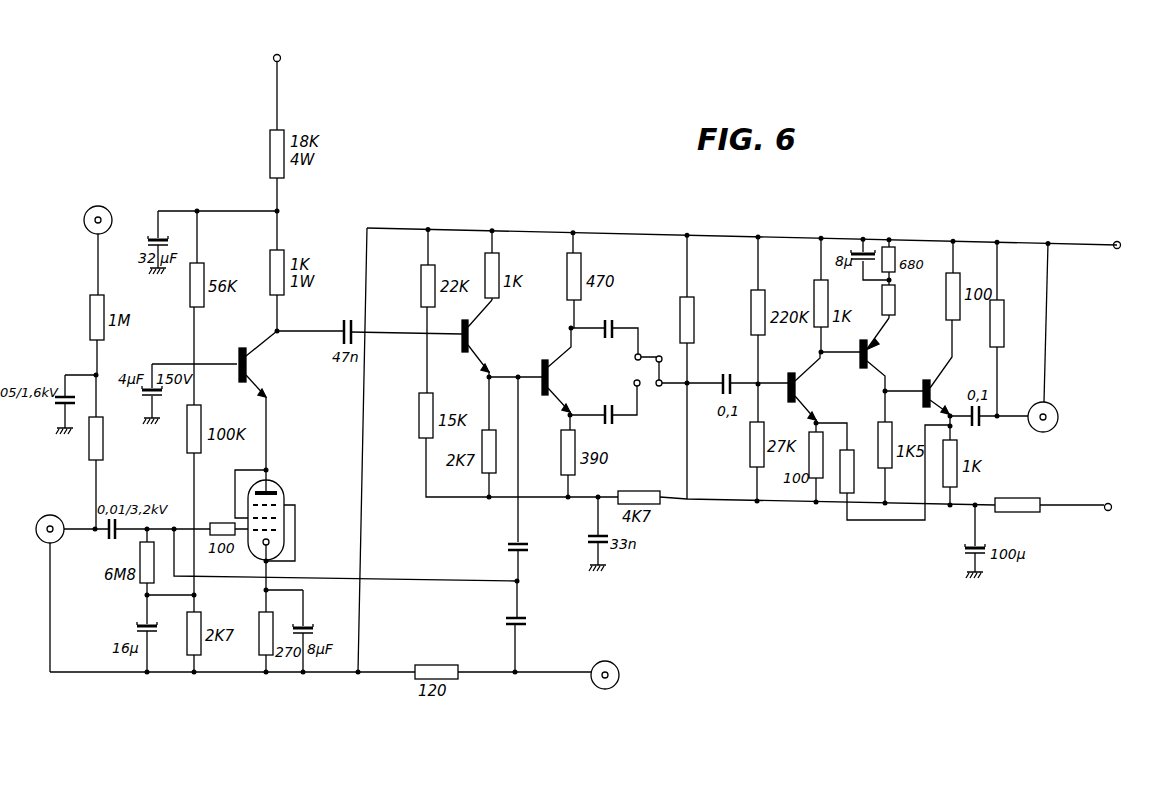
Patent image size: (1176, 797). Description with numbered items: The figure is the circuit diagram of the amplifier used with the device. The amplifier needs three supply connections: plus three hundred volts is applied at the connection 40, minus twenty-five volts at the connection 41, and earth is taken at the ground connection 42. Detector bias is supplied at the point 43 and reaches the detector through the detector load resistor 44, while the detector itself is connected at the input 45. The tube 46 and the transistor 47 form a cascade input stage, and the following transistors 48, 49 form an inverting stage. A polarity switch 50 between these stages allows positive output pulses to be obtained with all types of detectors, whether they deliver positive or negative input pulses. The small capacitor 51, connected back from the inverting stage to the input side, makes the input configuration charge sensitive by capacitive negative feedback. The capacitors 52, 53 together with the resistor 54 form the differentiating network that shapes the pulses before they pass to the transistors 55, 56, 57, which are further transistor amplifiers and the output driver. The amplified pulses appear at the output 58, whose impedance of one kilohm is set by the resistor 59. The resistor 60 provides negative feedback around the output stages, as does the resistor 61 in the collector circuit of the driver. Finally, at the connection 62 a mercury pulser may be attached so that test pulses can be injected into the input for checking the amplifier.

The connection 40 is at (274, 56).
The connection 41 is at (1106, 504).
The ground connection 42 is at (1114, 243).
The detector bias connection 43 is at (88, 228).
The detector load resistor 44 is at (89, 453).
The input 45 is at (41, 539).
The tube 46 is at (284, 528).
The transistor 47 is at (239, 369).
The transistor 48 is at (462, 341).
The transistor 49 is at (543, 398).
The polarity switch 50 is at (636, 375).
The small capacitor 51 is at (510, 550).
The capacitor of differentiating network 52 is at (606, 333).
The capacitor of differentiating network 53 is at (615, 419).
The resistor of differentiating network 54 is at (680, 303).
The transistor amplifier 55 is at (788, 393).
The transistor amplifier 56 is at (859, 346).
The output driver transistor 57 is at (923, 396).
The output 58 is at (1053, 410).
The output impedance 59 is at (1004, 309).
The negative feedback 60 is at (840, 495).
The negative feedback 61 is at (881, 298).
The test connection 62 is at (605, 661).